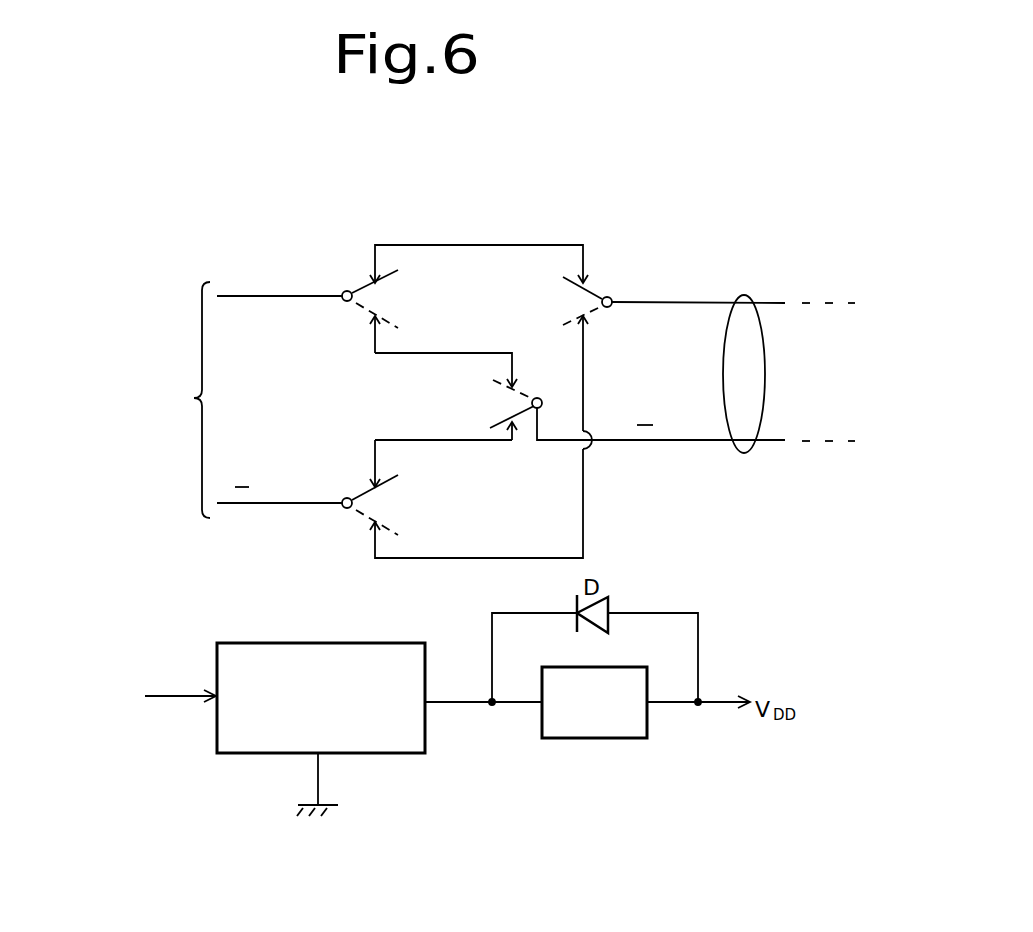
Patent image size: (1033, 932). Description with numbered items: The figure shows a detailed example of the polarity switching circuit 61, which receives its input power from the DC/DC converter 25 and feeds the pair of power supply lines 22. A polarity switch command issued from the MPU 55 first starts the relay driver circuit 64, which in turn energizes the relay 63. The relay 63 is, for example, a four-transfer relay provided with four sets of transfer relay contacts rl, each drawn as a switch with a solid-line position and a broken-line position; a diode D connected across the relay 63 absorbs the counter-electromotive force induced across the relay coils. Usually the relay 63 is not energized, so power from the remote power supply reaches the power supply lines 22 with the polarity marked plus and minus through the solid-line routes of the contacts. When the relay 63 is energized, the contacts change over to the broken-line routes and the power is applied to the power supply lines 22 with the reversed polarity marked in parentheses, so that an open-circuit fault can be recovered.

The relay switching circuit 61 is at (458, 184).
The pair of power supply lines 22 is at (745, 295).
The DC/DC converter 25 is at (126, 400).
The MPU 55 is at (140, 698).
The relay driver circuit 64 is at (372, 643).
The relay 63 is at (578, 738).